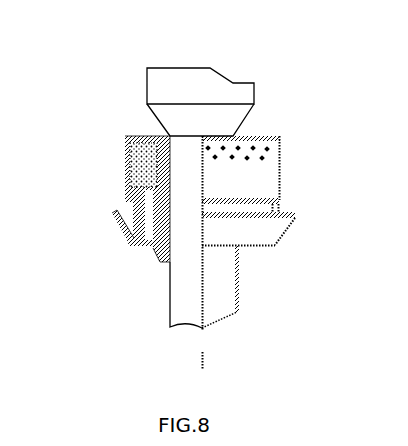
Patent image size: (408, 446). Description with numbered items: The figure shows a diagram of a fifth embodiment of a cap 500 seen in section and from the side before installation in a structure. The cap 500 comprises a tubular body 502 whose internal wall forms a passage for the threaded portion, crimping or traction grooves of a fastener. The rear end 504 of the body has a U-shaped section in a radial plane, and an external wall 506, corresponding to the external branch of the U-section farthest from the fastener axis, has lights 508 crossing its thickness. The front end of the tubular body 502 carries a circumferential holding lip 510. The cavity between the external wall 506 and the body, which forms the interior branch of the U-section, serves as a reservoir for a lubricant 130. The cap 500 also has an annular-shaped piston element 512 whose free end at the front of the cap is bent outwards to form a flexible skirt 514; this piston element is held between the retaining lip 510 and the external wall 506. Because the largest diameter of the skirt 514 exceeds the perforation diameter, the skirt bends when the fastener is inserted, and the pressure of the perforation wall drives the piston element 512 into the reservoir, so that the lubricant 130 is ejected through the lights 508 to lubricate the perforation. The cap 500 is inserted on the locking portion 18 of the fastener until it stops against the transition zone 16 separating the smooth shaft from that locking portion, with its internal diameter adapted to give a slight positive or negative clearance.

The transition zone 16 is at (183, 113).
The locking portion 18 is at (220, 290).
The lubricant 130 is at (150, 173).
The cap 500 is at (193, 190).
The tubular body 502 is at (280, 175).
The rear end 504 is at (145, 142).
The external wall 506 is at (127, 163).
The lights 508 is at (255, 148).
The circumferential holding lip 510 is at (162, 262).
The piston element 512 is at (255, 232).
The flexible skirt 514 is at (120, 230).